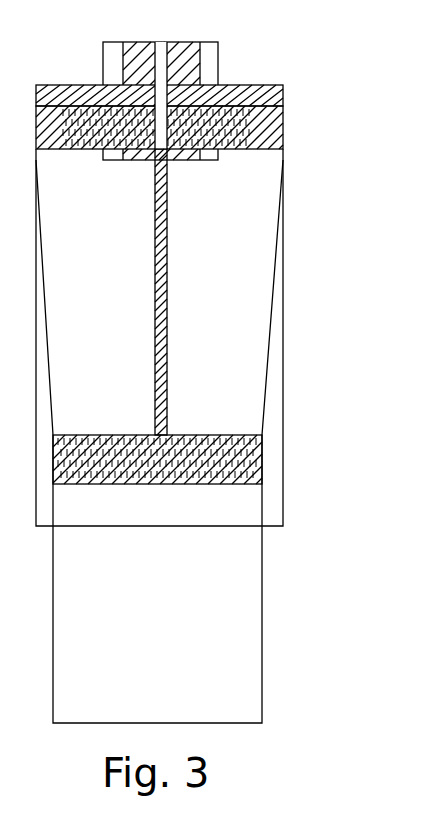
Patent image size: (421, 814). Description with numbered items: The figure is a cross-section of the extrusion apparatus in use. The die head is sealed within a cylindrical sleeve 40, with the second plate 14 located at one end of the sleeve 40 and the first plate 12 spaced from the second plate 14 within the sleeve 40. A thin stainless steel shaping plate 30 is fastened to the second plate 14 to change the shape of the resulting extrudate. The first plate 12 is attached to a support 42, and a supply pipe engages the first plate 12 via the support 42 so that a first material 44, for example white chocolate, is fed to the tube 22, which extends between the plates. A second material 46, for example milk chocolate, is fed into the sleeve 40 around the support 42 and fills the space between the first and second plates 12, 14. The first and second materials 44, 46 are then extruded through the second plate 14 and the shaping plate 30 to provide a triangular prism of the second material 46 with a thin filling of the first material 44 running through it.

The first plate 12 is at (263, 463).
The second plate 14 is at (268, 138).
The tube 22 is at (167, 293).
The shaping plate 30 is at (272, 96).
The cylindrical sleeve 40 is at (283, 421).
The support 42 is at (262, 620).
The first material 44 is at (161, 41).
The second material 46 is at (138, 48).